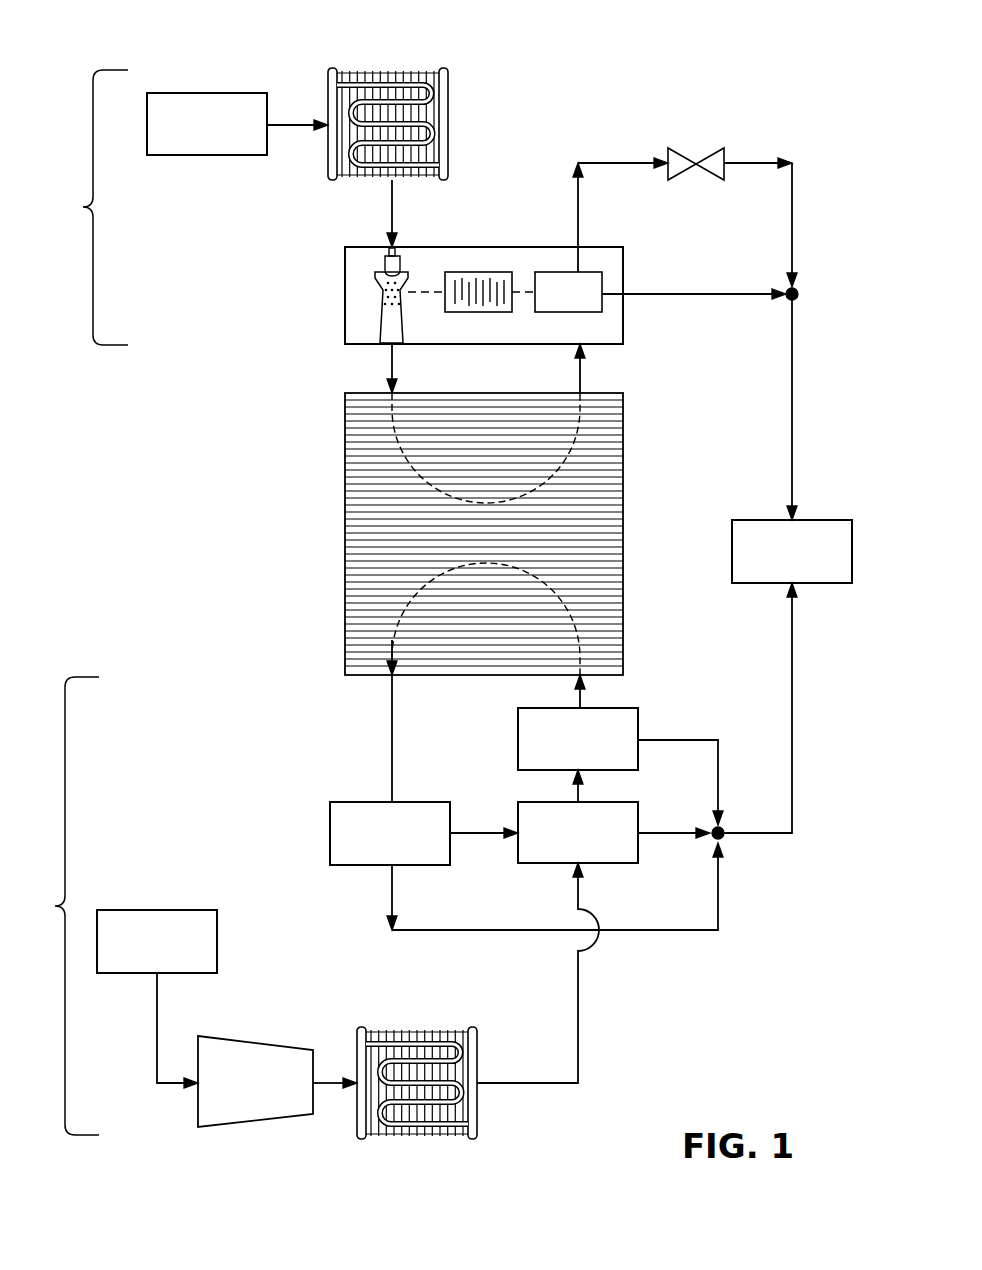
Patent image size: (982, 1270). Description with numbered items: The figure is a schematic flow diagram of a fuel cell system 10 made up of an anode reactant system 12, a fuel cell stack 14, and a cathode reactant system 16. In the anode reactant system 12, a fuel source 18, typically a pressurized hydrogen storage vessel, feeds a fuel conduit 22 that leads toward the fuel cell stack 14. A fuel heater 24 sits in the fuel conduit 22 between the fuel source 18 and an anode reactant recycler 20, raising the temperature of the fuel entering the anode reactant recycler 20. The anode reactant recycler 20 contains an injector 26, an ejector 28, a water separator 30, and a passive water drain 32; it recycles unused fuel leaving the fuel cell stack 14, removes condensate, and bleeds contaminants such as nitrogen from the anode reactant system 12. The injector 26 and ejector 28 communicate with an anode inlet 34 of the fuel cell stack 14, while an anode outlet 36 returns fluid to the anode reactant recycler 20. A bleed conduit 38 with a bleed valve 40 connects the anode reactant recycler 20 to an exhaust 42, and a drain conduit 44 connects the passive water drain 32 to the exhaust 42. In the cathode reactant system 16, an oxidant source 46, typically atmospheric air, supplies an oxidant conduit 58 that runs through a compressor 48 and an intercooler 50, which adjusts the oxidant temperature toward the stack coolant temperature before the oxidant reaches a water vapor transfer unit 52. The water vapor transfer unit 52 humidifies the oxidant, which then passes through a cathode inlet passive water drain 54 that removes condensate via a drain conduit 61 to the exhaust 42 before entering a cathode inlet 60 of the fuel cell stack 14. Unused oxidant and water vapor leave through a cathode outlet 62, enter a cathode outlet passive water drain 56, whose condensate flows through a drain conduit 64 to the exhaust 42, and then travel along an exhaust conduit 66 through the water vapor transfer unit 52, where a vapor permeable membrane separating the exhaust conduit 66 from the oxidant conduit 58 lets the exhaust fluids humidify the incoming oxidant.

The fuel cell system 10 is at (731, 84).
The anode reactant system 12 is at (90, 207).
The fuel cell stack 14 is at (345, 533).
The cathode reactant system 16 is at (62, 906).
The fuel source 18 is at (206, 93).
The anode reactant recycler 20 is at (345, 290).
The fuel conduit 22 is at (294, 121).
The fuel heater 24 is at (383, 68).
The injector 26 is at (385, 262).
The ejector 28 is at (388, 335).
The water separator 30 is at (480, 272).
The passive water drain 32 is at (570, 272).
The anode inlet 34 is at (388, 391).
The anode outlet 36 is at (582, 392).
The bleed conduit 38 is at (610, 163).
The bleed valve 40 is at (696, 164).
The exhaust 42 is at (751, 520).
The drain conduit 44 is at (740, 297).
The oxidant source 46 is at (217, 940).
The compressor 48 is at (254, 1040).
The intercooler 50 is at (404, 1027).
The water vapor transfer unit 52 is at (518, 818).
The cathode inlet passive water drain 54 is at (518, 738).
The cathode outlet passive water drain 56 is at (330, 832).
The oxidant conduit 58 is at (576, 692).
The cathode inlet 60 is at (584, 677).
The drain conduit 61 is at (722, 768).
The cathode outlet 62 is at (388, 677).
The drain conduit 64 is at (390, 897).
The exhaust conduit 66 is at (664, 836).